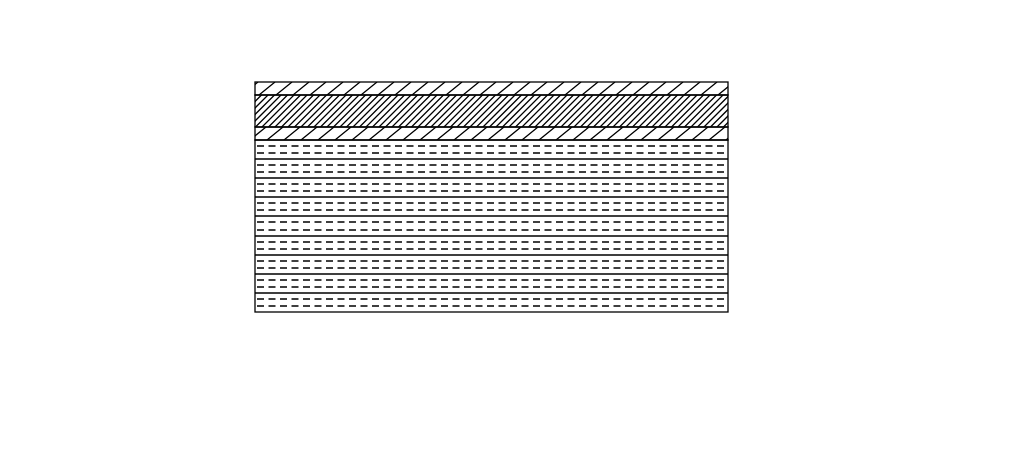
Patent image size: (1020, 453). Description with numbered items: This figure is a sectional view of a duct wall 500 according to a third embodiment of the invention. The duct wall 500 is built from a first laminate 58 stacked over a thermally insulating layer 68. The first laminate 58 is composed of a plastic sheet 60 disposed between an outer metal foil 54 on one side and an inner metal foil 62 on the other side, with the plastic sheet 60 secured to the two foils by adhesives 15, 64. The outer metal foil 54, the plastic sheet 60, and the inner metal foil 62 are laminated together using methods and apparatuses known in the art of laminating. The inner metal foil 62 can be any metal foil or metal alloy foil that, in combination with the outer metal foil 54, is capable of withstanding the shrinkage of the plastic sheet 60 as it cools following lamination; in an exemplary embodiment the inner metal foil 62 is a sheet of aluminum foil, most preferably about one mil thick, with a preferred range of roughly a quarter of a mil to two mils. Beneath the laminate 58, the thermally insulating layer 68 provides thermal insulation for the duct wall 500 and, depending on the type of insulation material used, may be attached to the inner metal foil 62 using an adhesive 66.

The duct wall 500 is at (226, 297).
The first laminate 58 is at (737, 110).
The adhesive 15 is at (736, 95).
The outer metal foil 54 is at (251, 90).
The plastic sheet 60 is at (251, 116).
The adhesive 64 is at (729, 128).
The inner metal foil 62 is at (251, 134).
The adhesive 66 is at (729, 140).
The thermally insulating layer 68 is at (253, 223).